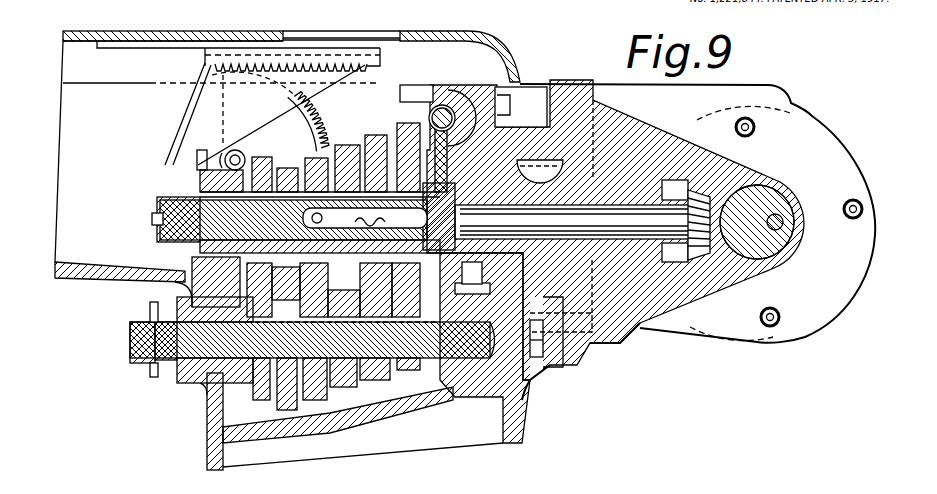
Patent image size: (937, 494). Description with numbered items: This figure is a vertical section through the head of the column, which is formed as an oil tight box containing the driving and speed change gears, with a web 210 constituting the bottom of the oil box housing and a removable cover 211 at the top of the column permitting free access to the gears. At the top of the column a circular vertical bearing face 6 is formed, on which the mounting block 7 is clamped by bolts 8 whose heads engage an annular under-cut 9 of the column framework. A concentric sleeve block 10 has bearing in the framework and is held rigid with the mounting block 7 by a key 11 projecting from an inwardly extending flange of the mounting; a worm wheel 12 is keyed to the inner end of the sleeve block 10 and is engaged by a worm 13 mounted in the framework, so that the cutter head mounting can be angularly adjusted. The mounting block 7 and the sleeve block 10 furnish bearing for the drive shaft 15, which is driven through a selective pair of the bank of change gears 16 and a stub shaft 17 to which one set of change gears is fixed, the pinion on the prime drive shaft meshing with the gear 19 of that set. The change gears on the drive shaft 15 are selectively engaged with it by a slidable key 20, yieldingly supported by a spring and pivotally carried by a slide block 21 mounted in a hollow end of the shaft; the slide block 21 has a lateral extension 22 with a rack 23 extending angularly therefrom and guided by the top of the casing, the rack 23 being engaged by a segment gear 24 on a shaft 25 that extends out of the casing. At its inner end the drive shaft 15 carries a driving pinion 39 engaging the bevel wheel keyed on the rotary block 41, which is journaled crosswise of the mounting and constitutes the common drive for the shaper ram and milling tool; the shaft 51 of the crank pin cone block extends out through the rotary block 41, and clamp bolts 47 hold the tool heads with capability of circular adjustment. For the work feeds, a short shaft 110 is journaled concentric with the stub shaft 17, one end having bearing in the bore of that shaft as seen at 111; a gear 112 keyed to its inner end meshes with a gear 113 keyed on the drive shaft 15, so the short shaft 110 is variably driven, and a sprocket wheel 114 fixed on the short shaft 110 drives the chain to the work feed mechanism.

The removable cover 211 is at (122, 33).
The rack 23 is at (323, 63).
The lateral extension 22 is at (195, 117).
The segment gear 24 is at (318, 135).
The shaft 25 is at (240, 158).
The slide block 21 is at (205, 227).
The slidable key 20 is at (365, 211).
The bank of change gears 16 is at (378, 140).
The worm 13 is at (443, 106).
The worm wheel 12 is at (465, 100).
The concentric sleeve block 10 is at (505, 165).
The key 11 is at (500, 172).
The drive shaft 15 is at (645, 200).
The driving pinion 39 is at (622, 220).
The rotary block 41 is at (775, 198).
The shaft 51 is at (780, 227).
The clamp bolts 47 is at (779, 313).
The gear 113 is at (197, 264).
The short shaft 110 is at (130, 347).
The sprocket wheel 114 is at (150, 373).
The bearing of short shaft in bore of stub shaft 111 is at (207, 387).
The gear 112 is at (253, 383).
The gear 19 is at (285, 412).
The stub shaft 17 is at (435, 345).
The web 210 is at (360, 424).
The circular vertical bearing face 6 is at (535, 360).
The bolts 8 is at (578, 368).
The mounting block 7 is at (622, 338).
The annular under-cut 9 is at (530, 370).